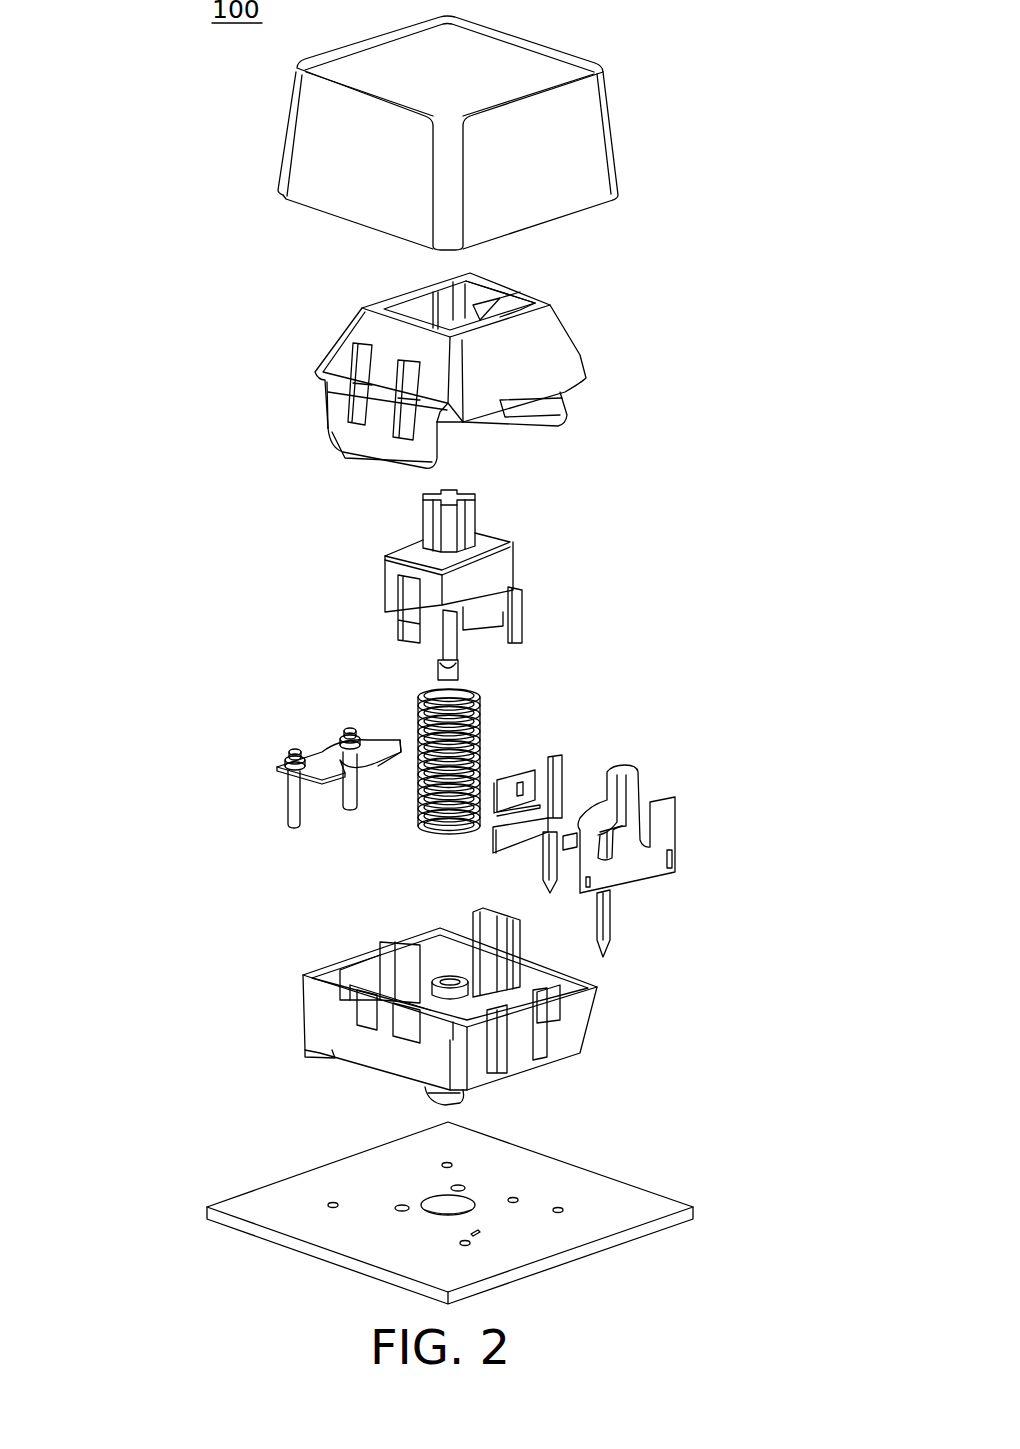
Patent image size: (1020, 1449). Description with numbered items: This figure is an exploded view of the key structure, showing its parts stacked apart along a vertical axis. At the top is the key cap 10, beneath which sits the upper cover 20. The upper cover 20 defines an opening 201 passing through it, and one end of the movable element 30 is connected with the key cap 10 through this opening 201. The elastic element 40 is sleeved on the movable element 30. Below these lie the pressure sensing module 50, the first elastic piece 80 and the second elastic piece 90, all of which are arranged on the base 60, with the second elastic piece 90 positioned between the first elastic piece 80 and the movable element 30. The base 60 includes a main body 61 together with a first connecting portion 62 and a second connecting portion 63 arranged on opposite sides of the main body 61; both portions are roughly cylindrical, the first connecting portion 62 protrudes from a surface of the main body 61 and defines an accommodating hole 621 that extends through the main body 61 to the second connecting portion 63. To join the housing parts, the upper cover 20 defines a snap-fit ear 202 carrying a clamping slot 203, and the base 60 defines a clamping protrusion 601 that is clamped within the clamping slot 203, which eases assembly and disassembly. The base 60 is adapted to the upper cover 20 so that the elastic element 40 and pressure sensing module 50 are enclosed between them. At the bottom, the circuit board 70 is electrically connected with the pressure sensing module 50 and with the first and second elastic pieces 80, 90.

The key cap 10 is at (588, 132).
The upper cover 20 is at (454, 372).
The opening 201 is at (487, 293).
The snap-fit ear 202 is at (372, 447).
The clamping slot 203 is at (403, 422).
The movable element 30 is at (492, 568).
The elastic element 40 is at (480, 713).
The pressure sensing module 50 is at (332, 747).
The base 60 is at (457, 1012).
The clamping protrusion 601 is at (407, 1023).
The main body 61 is at (567, 1017).
The first connecting portion 62 is at (447, 993).
The accommodating hole 621 is at (447, 978).
The second connecting portion 63 is at (420, 1093).
The circuit board 70 is at (573, 1178).
The first elastic piece 80 is at (630, 802).
The second elastic piece 90 is at (558, 770).